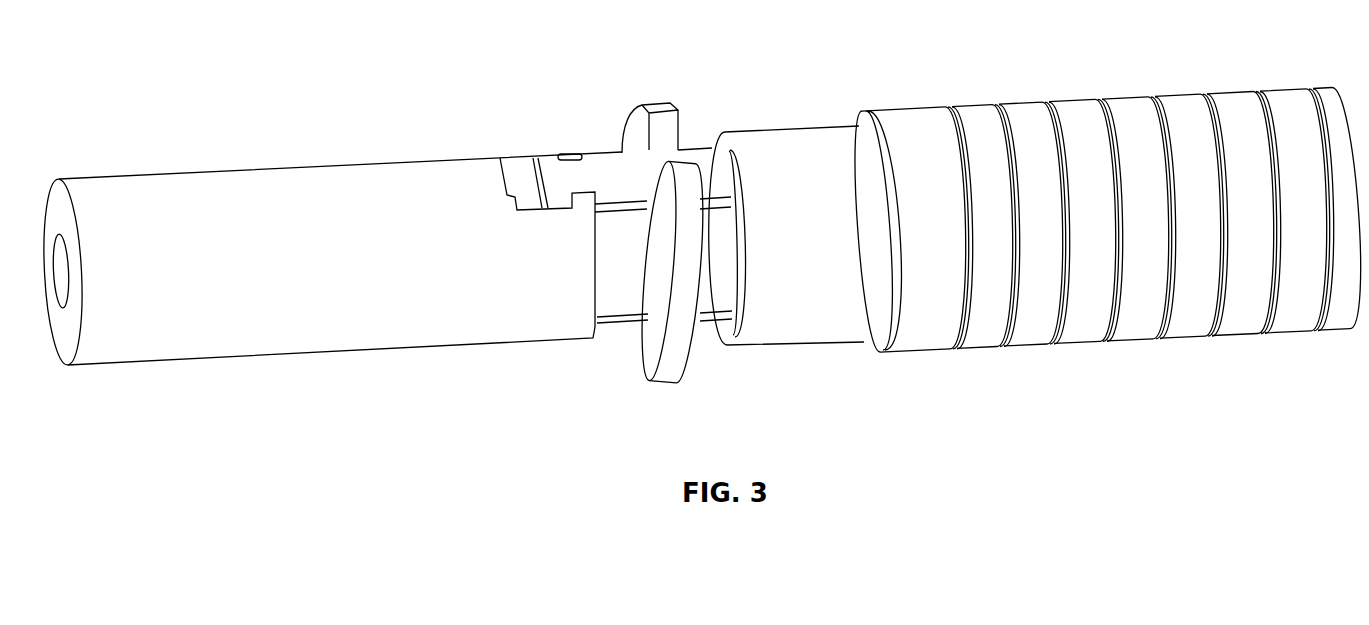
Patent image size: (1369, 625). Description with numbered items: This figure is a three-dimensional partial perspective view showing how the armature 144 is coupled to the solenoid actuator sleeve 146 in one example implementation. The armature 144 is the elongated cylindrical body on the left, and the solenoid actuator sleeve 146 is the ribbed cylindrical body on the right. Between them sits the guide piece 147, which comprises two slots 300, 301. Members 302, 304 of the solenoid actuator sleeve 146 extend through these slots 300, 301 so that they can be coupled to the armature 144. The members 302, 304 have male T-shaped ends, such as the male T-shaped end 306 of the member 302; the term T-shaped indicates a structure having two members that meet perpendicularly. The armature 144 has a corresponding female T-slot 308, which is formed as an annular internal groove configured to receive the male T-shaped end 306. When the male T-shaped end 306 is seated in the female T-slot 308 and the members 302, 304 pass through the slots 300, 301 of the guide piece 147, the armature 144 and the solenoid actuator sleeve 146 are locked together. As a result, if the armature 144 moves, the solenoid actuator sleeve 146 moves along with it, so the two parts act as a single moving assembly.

The armature 144 is at (158, 202).
The solenoid actuator sleeve 146 is at (920, 132).
The guide piece 147 is at (660, 108).
The slot 300 is at (685, 149).
The slot 301 is at (640, 345).
The member 302 is at (613, 170).
The member 304 is at (707, 330).
The male T-shaped end 306 is at (552, 170).
The female T-slot 308 is at (513, 168).